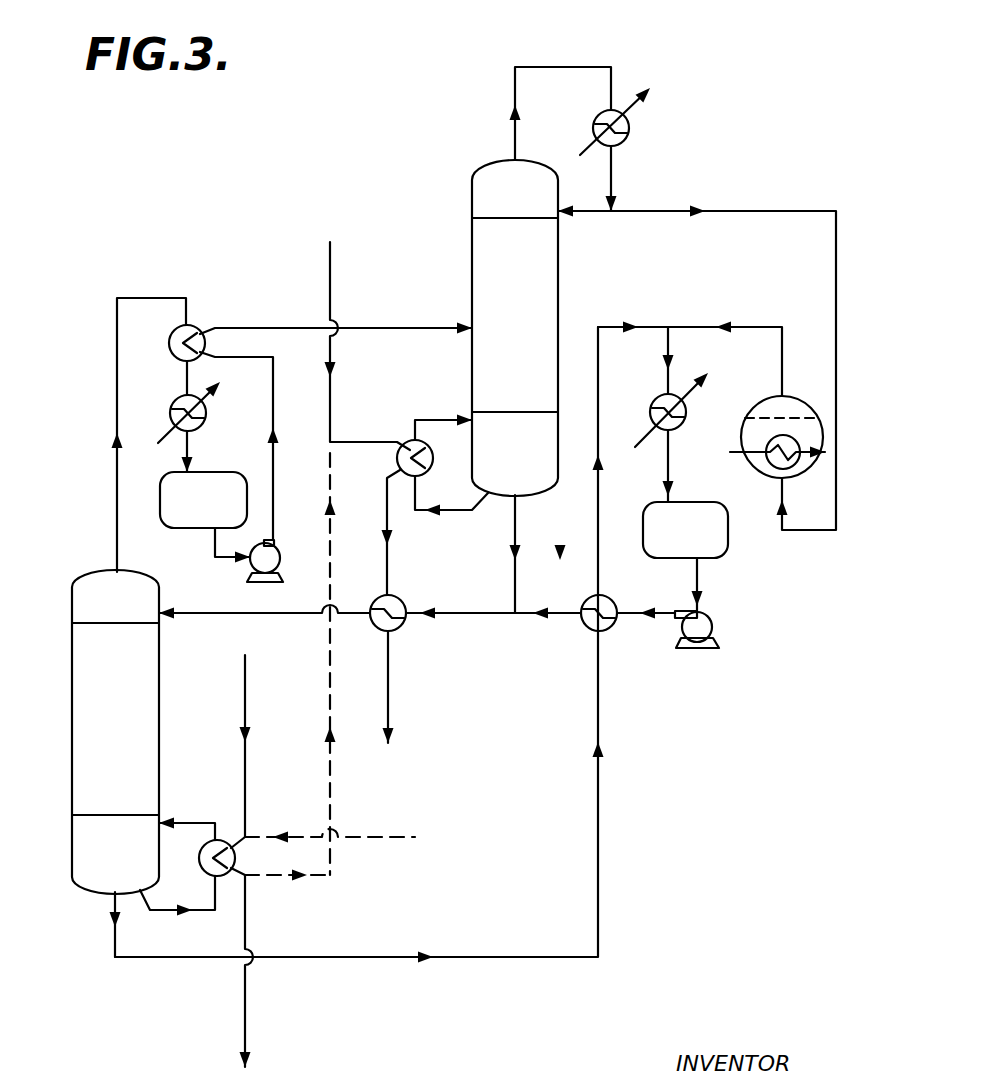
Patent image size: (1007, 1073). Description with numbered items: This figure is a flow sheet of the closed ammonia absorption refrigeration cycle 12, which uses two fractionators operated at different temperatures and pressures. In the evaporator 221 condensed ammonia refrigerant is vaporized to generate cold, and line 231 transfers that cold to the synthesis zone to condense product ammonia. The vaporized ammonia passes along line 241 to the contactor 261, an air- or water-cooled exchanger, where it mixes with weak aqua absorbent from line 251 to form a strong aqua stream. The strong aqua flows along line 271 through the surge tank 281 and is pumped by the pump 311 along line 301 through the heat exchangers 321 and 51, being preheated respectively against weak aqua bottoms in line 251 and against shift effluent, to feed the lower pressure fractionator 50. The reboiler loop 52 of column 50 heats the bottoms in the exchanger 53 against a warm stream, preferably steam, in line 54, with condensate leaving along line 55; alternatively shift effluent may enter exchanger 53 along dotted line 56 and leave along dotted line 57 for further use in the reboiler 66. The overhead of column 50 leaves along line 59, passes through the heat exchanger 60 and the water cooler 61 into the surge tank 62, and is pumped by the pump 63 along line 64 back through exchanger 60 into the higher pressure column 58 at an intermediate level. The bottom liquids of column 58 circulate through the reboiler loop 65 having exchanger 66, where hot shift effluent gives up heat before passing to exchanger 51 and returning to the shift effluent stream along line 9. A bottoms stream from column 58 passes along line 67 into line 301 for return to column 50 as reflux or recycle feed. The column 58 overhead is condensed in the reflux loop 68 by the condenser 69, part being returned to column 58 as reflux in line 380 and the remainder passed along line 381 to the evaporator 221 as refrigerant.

The absorption refrigeration cycle 12 is at (192, 194).
The shift effluent stream line 9 is at (330, 278).
The lower pressure fractionator 50 is at (72, 715).
The heat exchanger 51 is at (395, 632).
The reboiler loop 52 is at (165, 910).
The reboiler exchanger 53 is at (199, 840).
The warm stream line 54 is at (245, 771).
The steam condensate line 55 is at (245, 915).
The shift effluent entry line 56 is at (382, 840).
The shift effluent exit line 57 is at (330, 688).
The higher pressure fractionating column 58 is at (472, 200).
The overhead line 59 is at (117, 510).
The heat exchanger 60 is at (203, 331).
The water cooler 61 is at (175, 400).
The surge tank 62 is at (178, 530).
The pump 63 is at (278, 553).
The feed line 64 is at (268, 328).
The reboiler loop 65 is at (465, 515).
The reboiler heat exchanger 66 is at (405, 441).
The bottoms line 67 is at (515, 524).
The reflux loop 68 is at (572, 67).
The condenser 69 is at (632, 133).
The evaporator 221 is at (795, 396).
The cold transfer line 231 is at (805, 462).
The vaporized refrigerant line 241 is at (752, 327).
The weak aqua line 251 is at (598, 365).
The contactor 261 is at (681, 386).
The strong aqua line 271 is at (664, 450).
The surge tank 281 is at (728, 545).
The feed line 301 is at (490, 617).
The pump 311 is at (712, 622).
The heat exchanger 321 is at (588, 600).
The reflux line 380 is at (598, 218).
The refrigerant line 381 is at (760, 211).